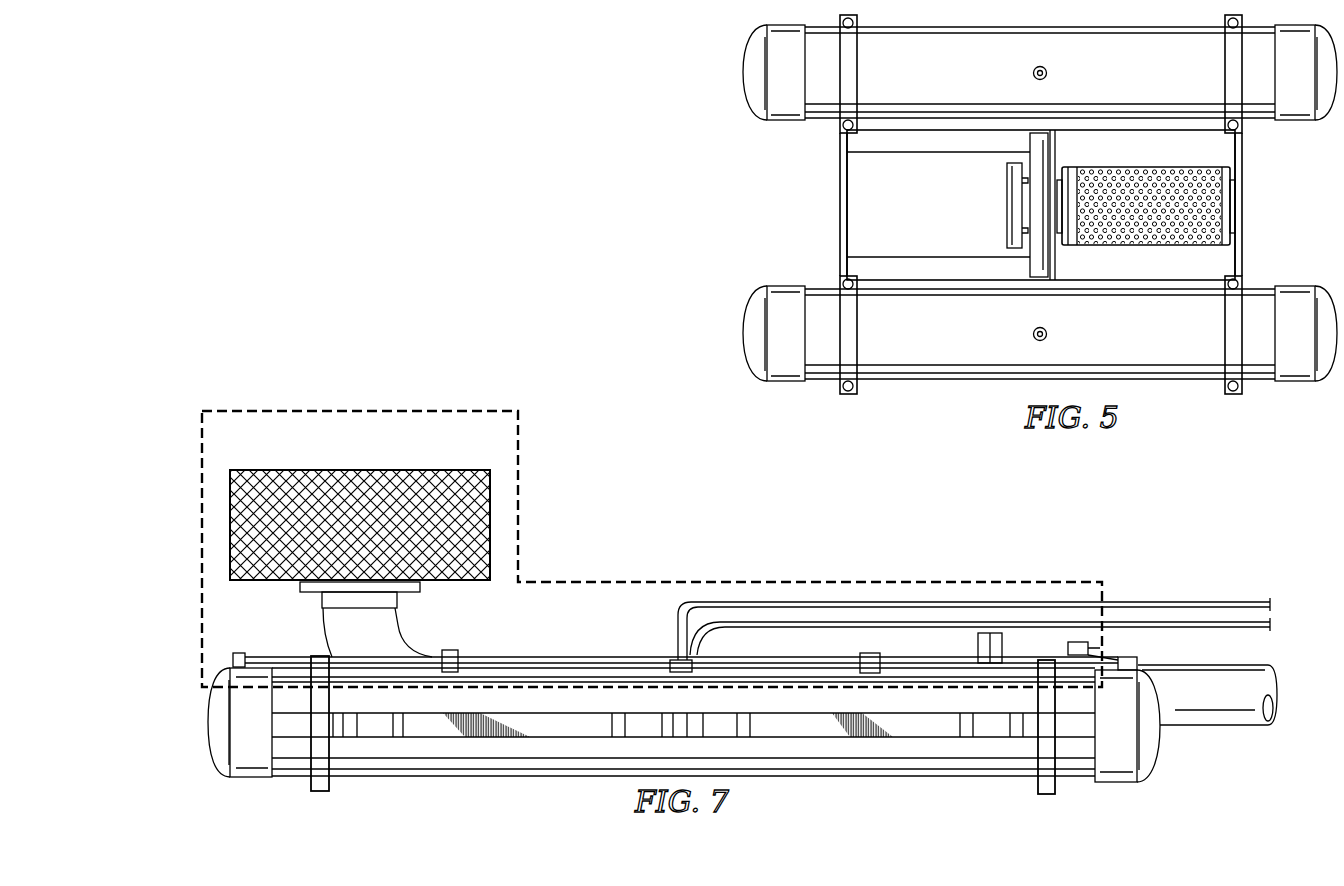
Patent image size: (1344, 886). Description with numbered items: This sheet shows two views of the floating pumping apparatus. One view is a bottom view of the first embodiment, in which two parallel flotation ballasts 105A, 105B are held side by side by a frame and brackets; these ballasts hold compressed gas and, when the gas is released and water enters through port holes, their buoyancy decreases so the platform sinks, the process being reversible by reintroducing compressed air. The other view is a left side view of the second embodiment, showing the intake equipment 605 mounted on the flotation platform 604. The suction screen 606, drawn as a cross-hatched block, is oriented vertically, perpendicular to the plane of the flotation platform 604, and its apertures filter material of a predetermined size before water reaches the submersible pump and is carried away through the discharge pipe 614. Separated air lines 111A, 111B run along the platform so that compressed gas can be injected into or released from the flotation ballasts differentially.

In FIG. 5, the float tube 105A is at (1047, 336).
In FIG. 5, the float tube 105B is at (1047, 72).
In FIG. 7, the air line 111A is at (1215, 622).
In FIG. 7, the air line 111B is at (1153, 600).
In FIG. 7, the flotation platform 604 is at (310, 782).
In FIG. 7, the intake equipment 605 is at (280, 409).
In FIG. 7, the suction screen 606 is at (356, 470).
In FIG. 7, the discharge pipe 614 is at (1215, 727).